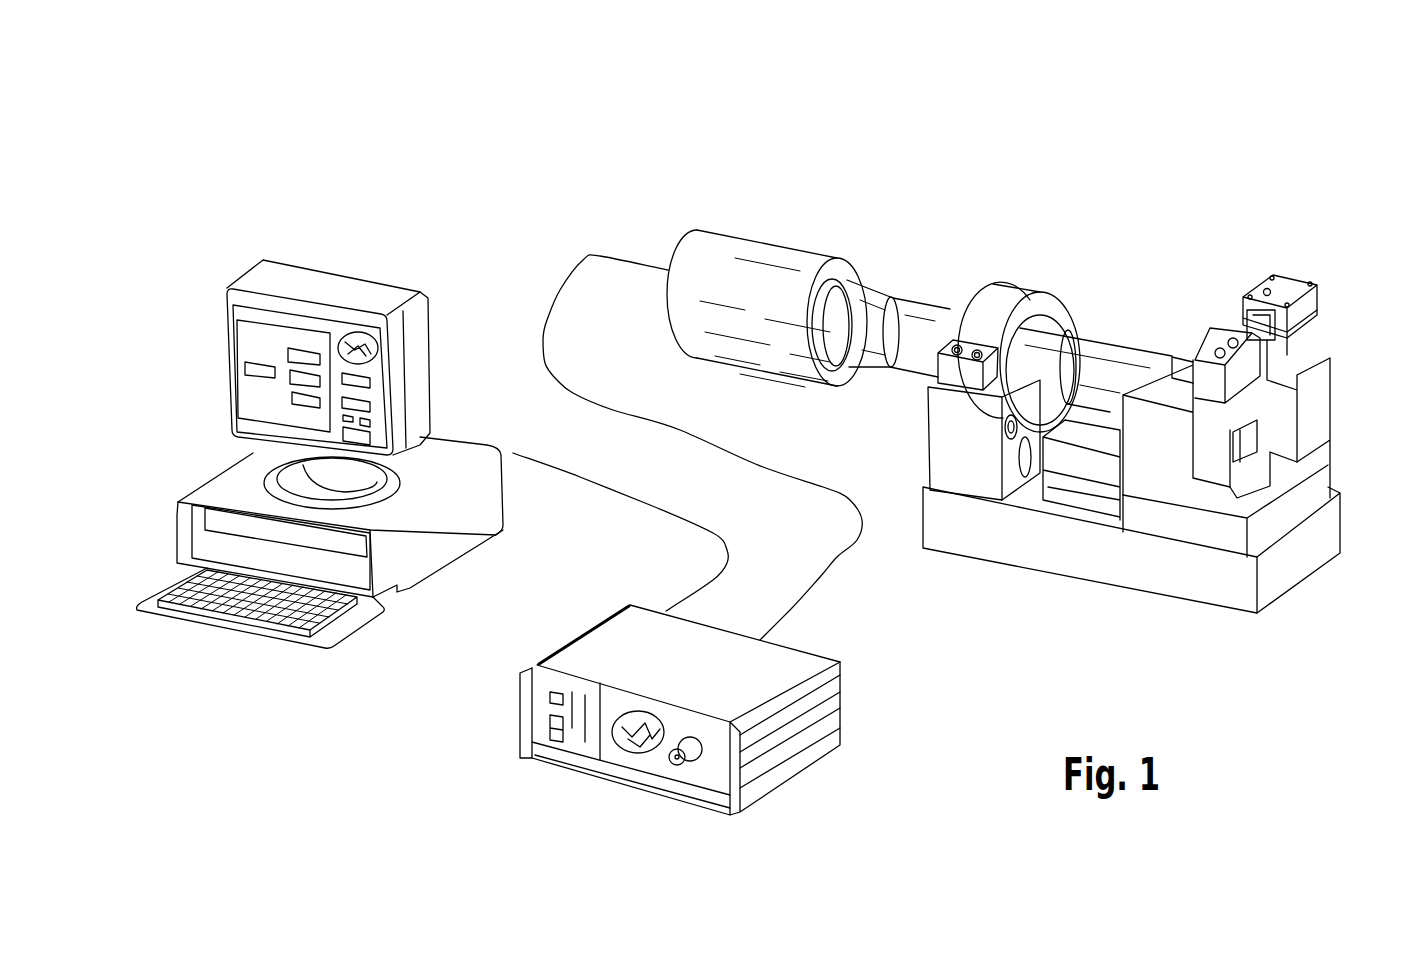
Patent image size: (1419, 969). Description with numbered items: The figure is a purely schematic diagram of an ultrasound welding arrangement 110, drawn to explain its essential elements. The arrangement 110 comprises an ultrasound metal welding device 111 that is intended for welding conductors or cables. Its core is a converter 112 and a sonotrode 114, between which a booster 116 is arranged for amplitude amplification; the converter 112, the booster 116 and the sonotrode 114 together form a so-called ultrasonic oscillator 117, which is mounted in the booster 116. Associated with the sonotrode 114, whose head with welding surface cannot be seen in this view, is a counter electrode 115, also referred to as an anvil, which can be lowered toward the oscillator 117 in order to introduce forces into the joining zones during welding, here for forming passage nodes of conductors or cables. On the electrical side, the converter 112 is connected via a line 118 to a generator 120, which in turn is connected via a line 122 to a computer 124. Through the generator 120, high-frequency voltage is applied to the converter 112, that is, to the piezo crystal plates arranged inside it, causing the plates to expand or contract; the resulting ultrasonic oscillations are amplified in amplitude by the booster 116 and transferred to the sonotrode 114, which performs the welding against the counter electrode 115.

The ultrasound welding arrangement 110 is at (499, 107).
The ultrasound metal welding device 111 is at (1225, 178).
The converter 112 is at (758, 270).
The sonotrode 114 is at (1117, 360).
The counter electrode 115 is at (1307, 335).
The booster 116 is at (1003, 310).
The ultrasonic oscillator 117 is at (919, 221).
The line 118 is at (828, 567).
The generator 120 is at (593, 655).
The line 122 is at (563, 470).
The computer 124 is at (233, 487).